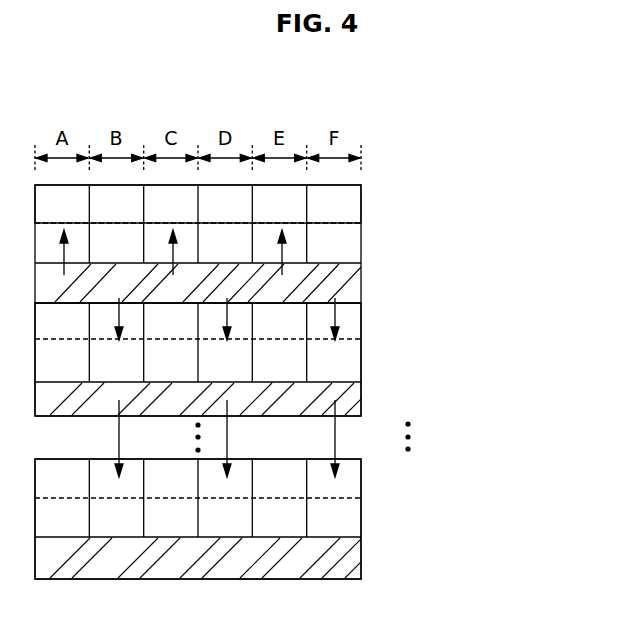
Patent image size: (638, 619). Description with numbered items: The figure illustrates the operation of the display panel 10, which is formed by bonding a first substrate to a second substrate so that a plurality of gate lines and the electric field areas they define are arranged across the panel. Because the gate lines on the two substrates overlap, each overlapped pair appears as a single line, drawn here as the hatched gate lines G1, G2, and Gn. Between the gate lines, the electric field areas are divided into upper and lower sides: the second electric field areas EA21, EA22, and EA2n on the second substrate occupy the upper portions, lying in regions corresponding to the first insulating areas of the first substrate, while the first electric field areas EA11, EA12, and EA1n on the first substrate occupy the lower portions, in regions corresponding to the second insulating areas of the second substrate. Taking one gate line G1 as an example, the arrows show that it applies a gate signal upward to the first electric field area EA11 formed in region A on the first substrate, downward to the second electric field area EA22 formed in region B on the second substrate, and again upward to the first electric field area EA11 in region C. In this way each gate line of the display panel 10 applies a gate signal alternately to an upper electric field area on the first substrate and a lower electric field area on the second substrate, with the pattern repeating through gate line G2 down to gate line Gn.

The display panel 10 is at (423, 153).
The second electric field area EA21 is at (361, 203).
The first electric field area EA11 is at (361, 243).
The gate line G1 is at (361, 283).
The second electric field area EA22 is at (361, 320).
The first electric field area EA12 is at (361, 358).
The gate line G2 is at (361, 398).
The second electric field area EA2n is at (361, 478).
The first electric field area EA1n is at (361, 517).
The gate line Gn is at (361, 555).